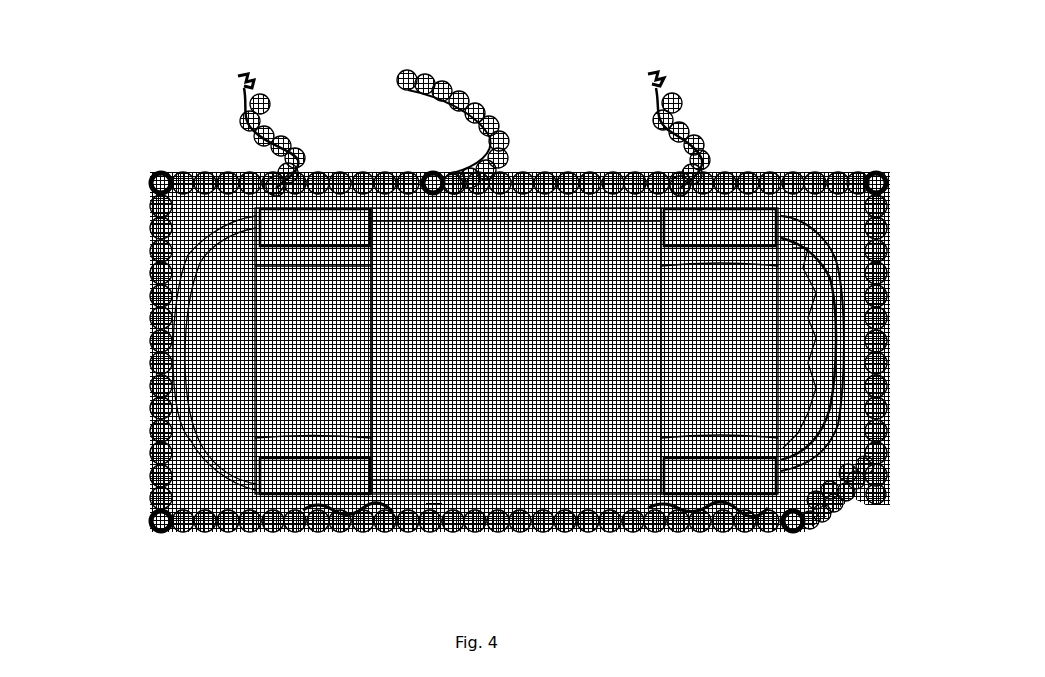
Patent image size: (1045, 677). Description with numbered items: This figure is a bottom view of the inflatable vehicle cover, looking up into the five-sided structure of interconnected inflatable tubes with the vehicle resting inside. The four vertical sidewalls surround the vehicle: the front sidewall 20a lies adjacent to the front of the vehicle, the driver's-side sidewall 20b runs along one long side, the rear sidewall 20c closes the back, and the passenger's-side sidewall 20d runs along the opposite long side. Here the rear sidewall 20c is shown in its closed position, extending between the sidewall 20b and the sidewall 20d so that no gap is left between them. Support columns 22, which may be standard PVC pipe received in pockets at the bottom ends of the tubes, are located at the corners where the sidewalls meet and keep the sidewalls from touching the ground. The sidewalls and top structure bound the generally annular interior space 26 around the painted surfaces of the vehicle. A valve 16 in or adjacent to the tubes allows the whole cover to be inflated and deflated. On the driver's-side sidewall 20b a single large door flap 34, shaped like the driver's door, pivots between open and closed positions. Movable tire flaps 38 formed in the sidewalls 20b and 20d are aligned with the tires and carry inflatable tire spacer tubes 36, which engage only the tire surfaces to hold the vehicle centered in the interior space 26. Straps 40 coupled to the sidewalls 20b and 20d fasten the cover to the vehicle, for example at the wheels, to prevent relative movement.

The valve 16 is at (140, 258).
The vertical sidewall 20a is at (142, 340).
The vertical sidewall 20b is at (810, 162).
The vertical sidewall 20c is at (535, 527).
The vertical sidewall 20d is at (885, 430).
The support column 22 is at (145, 166).
The interior space 26 is at (426, 500).
The door flap 34 is at (440, 72).
The tire spacer tube 36 is at (266, 158).
The tire flap 38 is at (284, 122).
The strap 40 is at (228, 165).